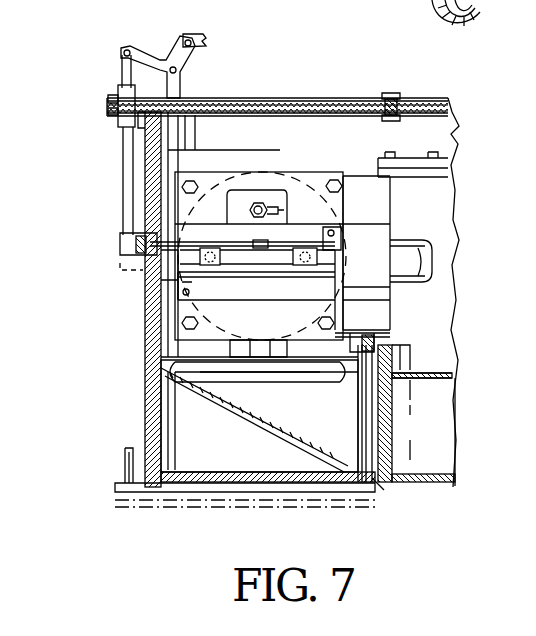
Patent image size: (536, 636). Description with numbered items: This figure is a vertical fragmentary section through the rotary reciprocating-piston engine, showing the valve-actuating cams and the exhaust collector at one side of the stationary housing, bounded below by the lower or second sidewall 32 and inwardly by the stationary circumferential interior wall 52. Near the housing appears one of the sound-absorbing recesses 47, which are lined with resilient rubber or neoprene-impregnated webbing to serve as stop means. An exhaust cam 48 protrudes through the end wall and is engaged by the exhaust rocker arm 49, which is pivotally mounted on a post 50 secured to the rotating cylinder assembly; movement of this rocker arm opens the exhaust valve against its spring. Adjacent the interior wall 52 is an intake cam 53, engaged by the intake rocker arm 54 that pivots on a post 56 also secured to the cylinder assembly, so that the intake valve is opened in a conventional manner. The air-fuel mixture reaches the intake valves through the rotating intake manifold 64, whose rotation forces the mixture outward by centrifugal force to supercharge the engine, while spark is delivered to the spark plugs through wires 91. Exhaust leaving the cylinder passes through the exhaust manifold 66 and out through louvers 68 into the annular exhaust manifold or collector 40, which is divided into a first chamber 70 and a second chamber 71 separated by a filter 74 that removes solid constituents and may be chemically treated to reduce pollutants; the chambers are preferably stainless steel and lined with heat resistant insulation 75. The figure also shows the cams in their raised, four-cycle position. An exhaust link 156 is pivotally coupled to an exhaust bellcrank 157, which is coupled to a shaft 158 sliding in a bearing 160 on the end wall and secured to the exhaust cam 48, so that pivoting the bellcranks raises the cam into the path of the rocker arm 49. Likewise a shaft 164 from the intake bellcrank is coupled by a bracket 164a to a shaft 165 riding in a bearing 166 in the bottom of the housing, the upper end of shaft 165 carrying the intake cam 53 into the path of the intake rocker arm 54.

The lower or second sidewall 32 is at (440, 480).
The annular exhaust manifold 40 is at (172, 490).
The stop means or recesses 47 is at (480, 18).
The exhaust cam 48 is at (120, 244).
The exhaust rocker arm 49 is at (143, 271).
The post 50 is at (339, 244).
The stationary circumferential interior wall 52 is at (430, 218).
The intake cam 53 is at (378, 346).
The intake rocker arm 54 is at (282, 291).
The post 56 is at (178, 284).
The intake manifold 64 is at (424, 263).
The exhaust manifold 66 is at (289, 353).
The louvers 68 is at (290, 375).
The first chamber 70 is at (340, 436).
The second chamber 71 is at (234, 460).
The filter 74 is at (230, 409).
The heat resistant insulation 75 is at (298, 466).
The wires 91 is at (284, 205).
The exhaust link 156 is at (230, 19).
The exhaust bellcrank 157 is at (183, 60).
The shaft 158 is at (126, 181).
The bearing 160 is at (122, 124).
The shaft 164 is at (125, 463).
The bracket 164a is at (258, 494).
The shaft 165 is at (382, 488).
The bearing 166 is at (380, 438).